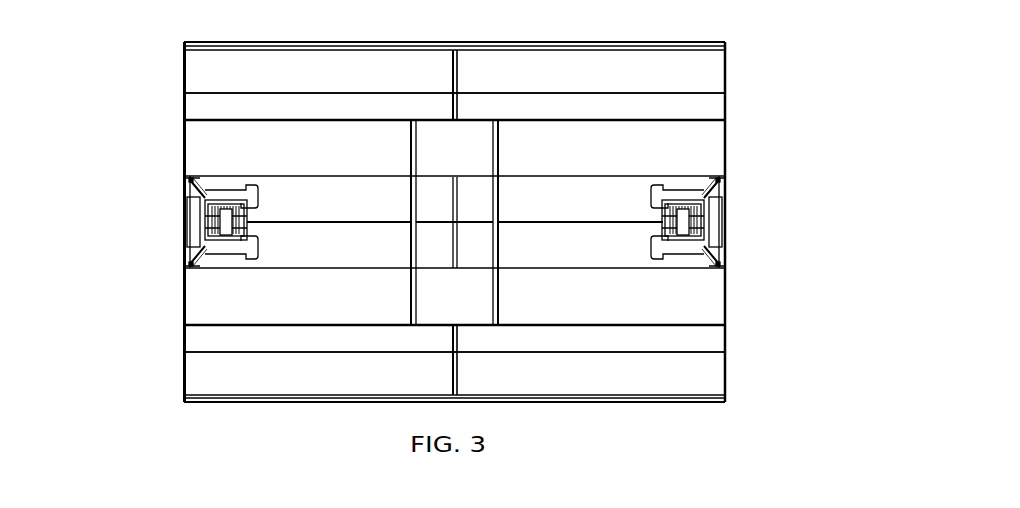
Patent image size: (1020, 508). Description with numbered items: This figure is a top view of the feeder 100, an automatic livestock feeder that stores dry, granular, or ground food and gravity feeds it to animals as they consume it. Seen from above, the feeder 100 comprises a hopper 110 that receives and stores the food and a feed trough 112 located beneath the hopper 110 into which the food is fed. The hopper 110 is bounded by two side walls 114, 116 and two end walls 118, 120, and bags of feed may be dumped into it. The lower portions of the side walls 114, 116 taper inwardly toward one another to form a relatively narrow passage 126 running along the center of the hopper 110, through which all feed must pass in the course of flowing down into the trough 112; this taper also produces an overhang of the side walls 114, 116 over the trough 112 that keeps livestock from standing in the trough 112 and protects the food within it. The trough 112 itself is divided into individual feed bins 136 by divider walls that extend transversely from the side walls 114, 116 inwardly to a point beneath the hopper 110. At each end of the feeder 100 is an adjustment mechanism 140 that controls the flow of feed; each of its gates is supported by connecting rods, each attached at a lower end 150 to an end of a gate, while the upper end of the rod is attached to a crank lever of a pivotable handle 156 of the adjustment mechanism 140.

The feeder 100 is at (150, 67).
The hopper 110 is at (683, 306).
The feed trough 112 is at (640, 67).
The side wall 114 is at (263, 118).
The side wall 116 is at (273, 330).
The end wall 118 is at (730, 287).
The end wall 120 is at (183, 366).
The passage 126 is at (279, 250).
The feed bin 136 is at (428, 65).
The adjustment mechanism 140 is at (211, 176).
The lower end 150 is at (407, 197).
The pivotable handle 156 is at (665, 188).